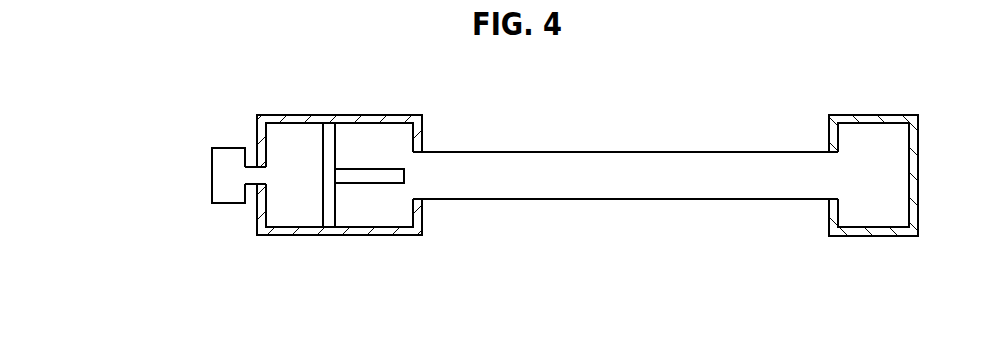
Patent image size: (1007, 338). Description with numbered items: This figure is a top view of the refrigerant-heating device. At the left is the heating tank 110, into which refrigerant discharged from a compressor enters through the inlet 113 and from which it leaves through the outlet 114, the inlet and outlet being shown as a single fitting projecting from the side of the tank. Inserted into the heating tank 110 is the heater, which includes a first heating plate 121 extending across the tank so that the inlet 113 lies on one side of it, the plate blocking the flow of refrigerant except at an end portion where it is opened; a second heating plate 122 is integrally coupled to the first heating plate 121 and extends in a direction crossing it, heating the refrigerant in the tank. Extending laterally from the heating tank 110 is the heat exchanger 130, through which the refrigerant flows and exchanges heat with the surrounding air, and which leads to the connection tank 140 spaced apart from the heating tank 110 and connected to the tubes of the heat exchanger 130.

The heating tank 110 is at (417, 227).
The inlet 113 is at (160, 175).
The outlet 114 is at (255, 175).
The first heating plate 121 is at (332, 218).
The second heating plate 122 is at (375, 176).
The heat exchanger 130 is at (671, 200).
The connection tank 140 is at (858, 237).